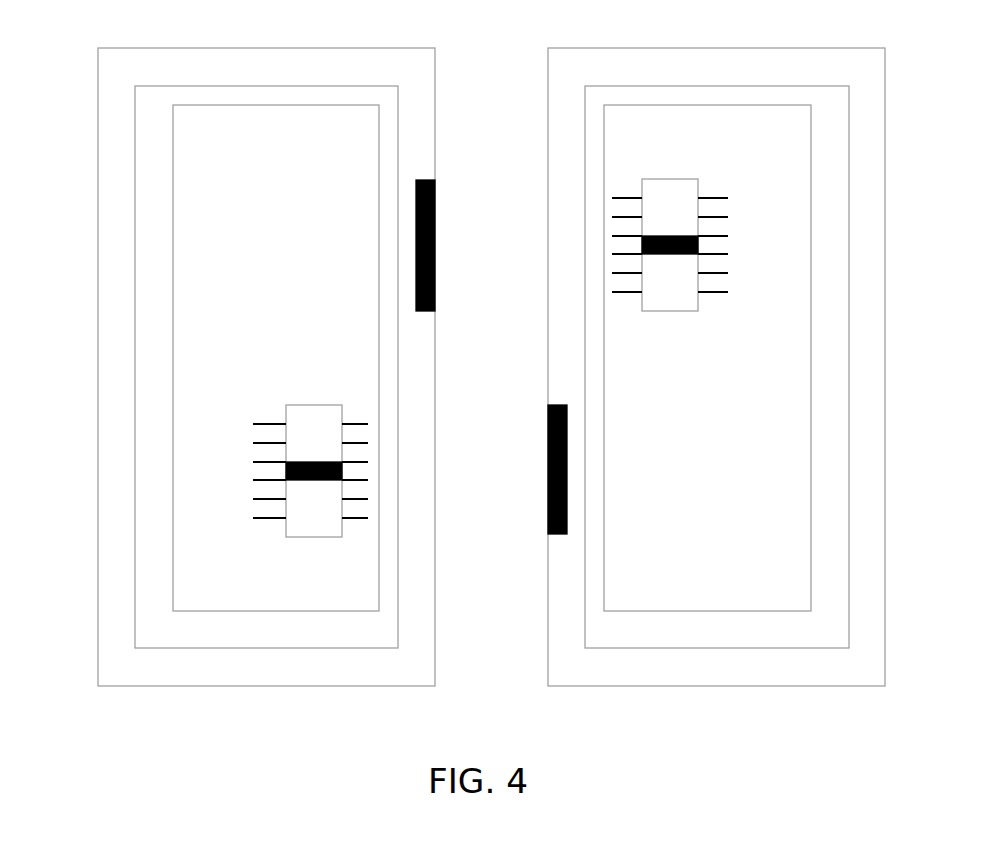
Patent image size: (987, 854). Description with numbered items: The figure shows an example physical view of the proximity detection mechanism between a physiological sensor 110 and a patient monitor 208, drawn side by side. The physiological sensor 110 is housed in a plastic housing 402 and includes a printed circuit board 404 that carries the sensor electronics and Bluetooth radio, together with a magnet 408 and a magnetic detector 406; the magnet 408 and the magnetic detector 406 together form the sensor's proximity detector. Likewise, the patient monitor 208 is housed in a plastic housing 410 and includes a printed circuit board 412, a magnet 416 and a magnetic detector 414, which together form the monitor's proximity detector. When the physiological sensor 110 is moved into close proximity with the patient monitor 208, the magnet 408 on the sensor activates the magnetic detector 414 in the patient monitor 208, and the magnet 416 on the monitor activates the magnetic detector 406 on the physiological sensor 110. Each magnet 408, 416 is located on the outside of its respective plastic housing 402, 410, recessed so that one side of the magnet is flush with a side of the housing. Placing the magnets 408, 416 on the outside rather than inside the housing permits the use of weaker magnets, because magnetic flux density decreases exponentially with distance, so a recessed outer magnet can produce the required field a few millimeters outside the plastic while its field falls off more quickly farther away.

The physiological sensor 110 is at (167, 48).
The patient monitor 208 is at (635, 48).
The plastic housing 402 is at (117, 146).
The printed circuit board 404 is at (260, 612).
The magnetic detector 406 is at (310, 404).
The magnet 408 is at (437, 193).
The plastic housing 410 is at (865, 146).
The printed circuit board 412 is at (723, 611).
The magnetic detector 414 is at (670, 178).
The magnet 416 is at (547, 418).